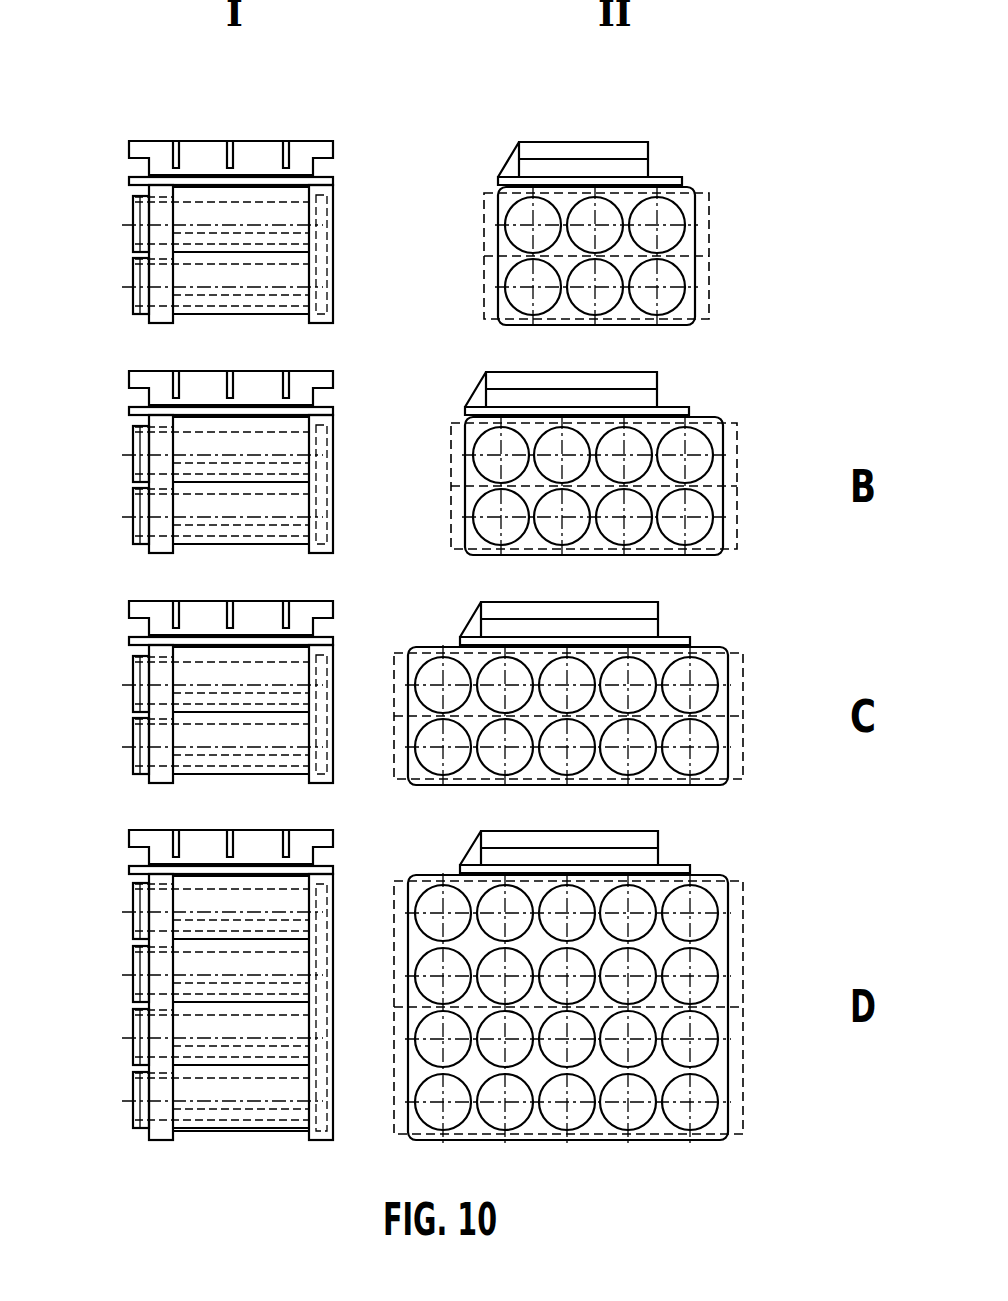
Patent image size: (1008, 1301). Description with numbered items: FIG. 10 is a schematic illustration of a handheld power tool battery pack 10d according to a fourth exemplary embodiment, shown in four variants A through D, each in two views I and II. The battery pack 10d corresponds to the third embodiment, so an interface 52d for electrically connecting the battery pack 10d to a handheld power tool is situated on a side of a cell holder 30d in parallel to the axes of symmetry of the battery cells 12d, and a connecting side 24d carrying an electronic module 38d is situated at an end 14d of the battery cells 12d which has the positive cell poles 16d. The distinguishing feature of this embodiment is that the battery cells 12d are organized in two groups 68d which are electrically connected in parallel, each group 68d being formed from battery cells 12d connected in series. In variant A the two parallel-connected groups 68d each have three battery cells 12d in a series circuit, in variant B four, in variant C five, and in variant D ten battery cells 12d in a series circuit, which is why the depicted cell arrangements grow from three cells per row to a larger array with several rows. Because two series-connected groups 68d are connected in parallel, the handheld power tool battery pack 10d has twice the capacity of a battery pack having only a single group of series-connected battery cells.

The handheld power tool battery pack 10d is at (124, 114).
The battery cells 12d is at (190, 275).
The end of battery cells 14d is at (333, 210).
The positive cell poles 16d is at (306, 253).
The connecting side 24d is at (313, 302).
The cell holder 30d is at (205, 318).
The electronic module 38d is at (320, 250).
The interface 52d is at (258, 152).
The groups 68d is at (731, 225).